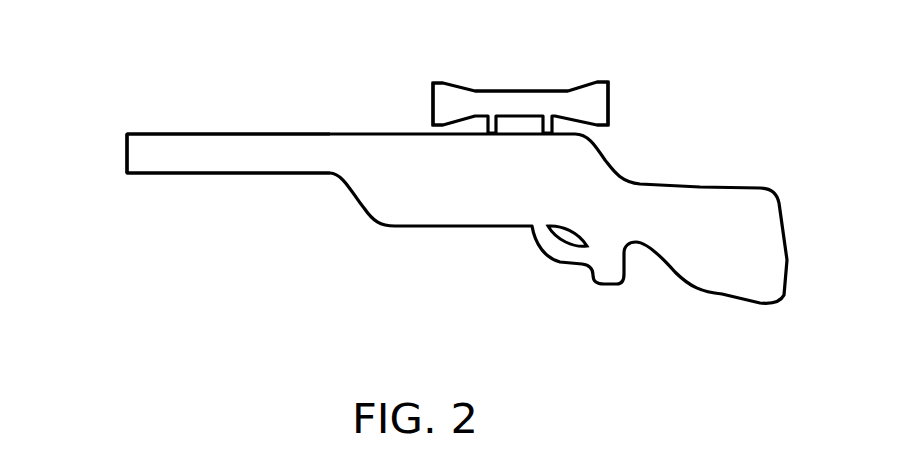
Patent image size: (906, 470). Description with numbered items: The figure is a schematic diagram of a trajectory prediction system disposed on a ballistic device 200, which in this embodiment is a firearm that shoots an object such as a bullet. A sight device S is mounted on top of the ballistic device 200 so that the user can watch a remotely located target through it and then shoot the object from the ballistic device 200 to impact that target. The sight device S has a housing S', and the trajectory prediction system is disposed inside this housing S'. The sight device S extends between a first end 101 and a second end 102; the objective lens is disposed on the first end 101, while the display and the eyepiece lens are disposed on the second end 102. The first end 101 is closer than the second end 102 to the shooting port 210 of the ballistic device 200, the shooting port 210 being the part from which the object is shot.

The ballistic device 200 is at (432, 232).
The shooting port 210 is at (127, 155).
The sight device S is at (521, 70).
The housing S' is at (521, 57).
The first end 101 is at (432, 104).
The second end 102 is at (609, 103).